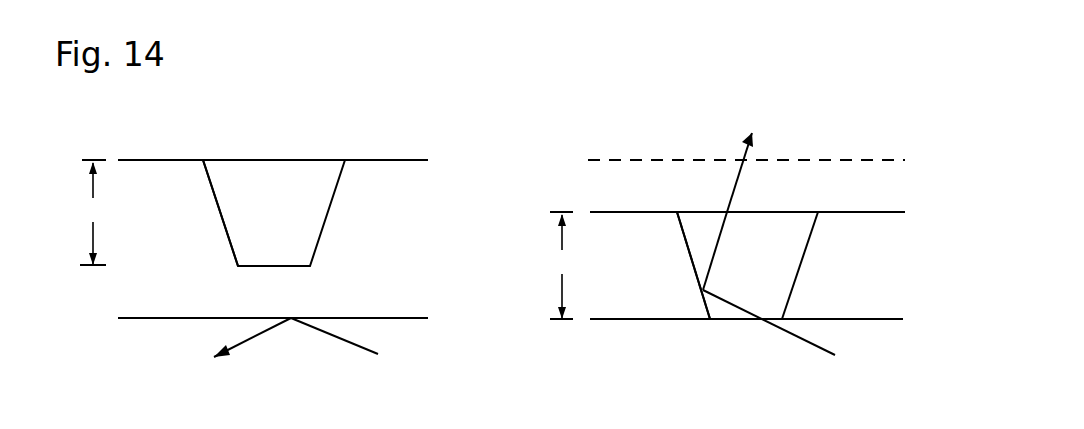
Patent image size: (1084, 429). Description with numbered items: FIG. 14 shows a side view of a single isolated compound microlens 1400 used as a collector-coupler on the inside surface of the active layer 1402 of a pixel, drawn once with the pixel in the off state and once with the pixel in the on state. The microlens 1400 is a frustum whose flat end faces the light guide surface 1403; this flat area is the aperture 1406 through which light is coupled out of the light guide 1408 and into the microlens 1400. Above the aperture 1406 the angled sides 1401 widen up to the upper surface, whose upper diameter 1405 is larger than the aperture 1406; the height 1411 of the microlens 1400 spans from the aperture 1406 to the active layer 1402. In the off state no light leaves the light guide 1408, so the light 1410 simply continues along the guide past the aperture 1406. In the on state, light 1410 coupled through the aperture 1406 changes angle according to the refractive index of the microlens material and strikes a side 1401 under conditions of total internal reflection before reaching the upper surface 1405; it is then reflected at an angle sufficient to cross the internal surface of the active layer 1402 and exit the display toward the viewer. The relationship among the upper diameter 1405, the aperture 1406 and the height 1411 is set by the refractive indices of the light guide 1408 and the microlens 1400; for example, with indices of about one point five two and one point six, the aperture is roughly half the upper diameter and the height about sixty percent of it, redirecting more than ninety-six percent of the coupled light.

The compound microlens 1400 is at (510, 239).
The side of the microlens 1401 is at (222, 219).
The active layer 1402 is at (383, 160).
The light guide surface 1403 is at (370, 318).
The upper diameter 1405 is at (248, 160).
The aperture 1406 is at (250, 268).
The light guide 1408 is at (498, 262).
The light 1410 is at (585, 296).
The height of the microlens 1411 is at (329, 239).